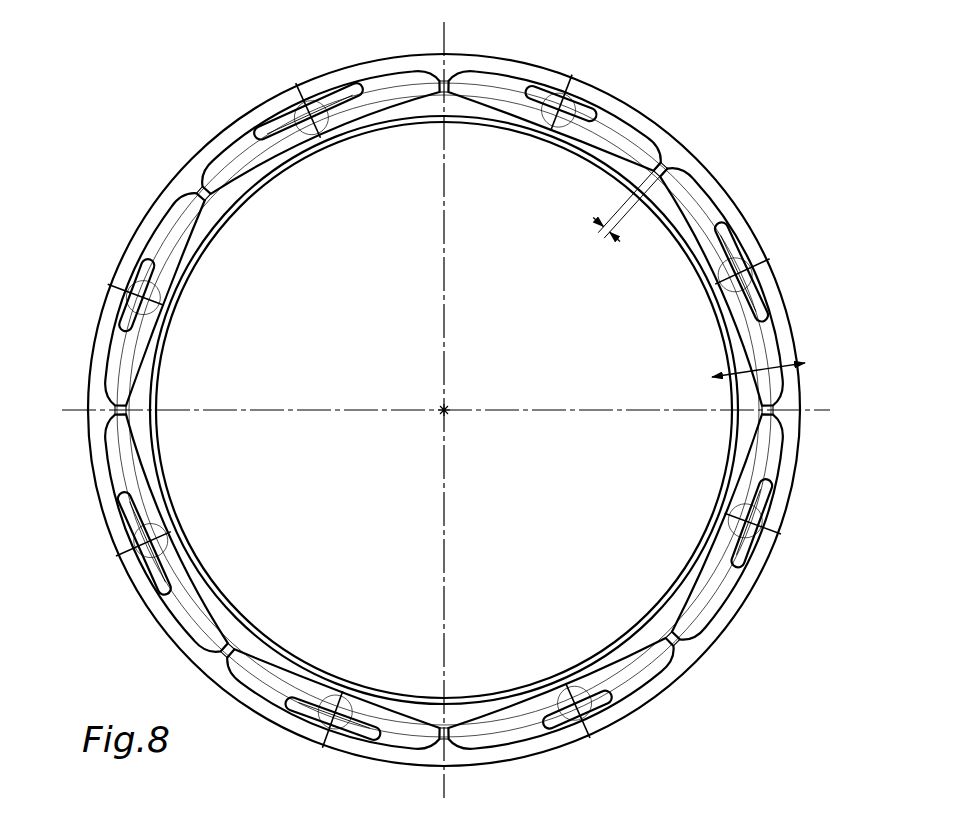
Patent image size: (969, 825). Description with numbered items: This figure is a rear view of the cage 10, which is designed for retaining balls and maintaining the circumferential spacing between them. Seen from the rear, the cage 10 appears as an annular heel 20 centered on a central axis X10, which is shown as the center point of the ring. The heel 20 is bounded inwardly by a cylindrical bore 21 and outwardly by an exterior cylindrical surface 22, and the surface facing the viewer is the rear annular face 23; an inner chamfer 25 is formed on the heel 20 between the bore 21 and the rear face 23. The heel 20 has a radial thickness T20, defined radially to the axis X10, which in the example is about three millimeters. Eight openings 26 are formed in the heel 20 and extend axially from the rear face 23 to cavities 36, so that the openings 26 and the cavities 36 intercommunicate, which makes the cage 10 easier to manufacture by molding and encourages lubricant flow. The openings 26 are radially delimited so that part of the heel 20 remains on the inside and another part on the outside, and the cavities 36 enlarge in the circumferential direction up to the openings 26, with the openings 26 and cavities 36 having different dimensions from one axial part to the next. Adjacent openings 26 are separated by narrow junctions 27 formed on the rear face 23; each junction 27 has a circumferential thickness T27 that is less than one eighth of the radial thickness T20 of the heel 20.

The cage 10 is at (148, 125).
The annular heel 20 is at (453, 401).
The cylindrical bore 21 is at (177, 508).
The exterior cylindrical surface 22 is at (105, 527).
The rear annular face 23 is at (100, 470).
The inner chamfer 25 is at (202, 555).
The opening 26 is at (625, 122).
The junction 27 is at (662, 170).
The cavity 36 is at (577, 97).
The radial thickness T20 is at (805, 363).
The thickness of junction T27 is at (593, 217).
The central axis X10 is at (446, 410).